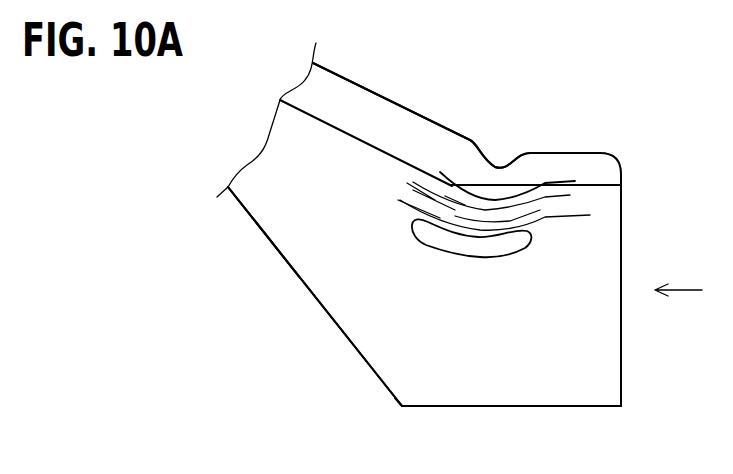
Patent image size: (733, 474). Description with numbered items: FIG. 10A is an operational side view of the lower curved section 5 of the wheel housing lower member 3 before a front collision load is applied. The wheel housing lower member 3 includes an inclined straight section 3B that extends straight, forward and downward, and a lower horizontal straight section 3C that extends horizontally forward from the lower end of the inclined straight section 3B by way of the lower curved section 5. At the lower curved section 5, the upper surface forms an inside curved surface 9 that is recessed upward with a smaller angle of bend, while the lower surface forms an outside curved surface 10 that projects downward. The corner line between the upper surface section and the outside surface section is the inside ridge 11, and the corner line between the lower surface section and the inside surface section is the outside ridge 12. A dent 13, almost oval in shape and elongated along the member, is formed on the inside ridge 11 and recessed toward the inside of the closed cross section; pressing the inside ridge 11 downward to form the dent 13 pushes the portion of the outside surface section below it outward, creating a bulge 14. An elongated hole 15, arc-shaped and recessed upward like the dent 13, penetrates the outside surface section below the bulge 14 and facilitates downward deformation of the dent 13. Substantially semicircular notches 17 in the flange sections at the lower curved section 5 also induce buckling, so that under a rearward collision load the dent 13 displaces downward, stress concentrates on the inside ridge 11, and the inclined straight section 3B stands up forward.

The wheel housing lower member 3 is at (263, 248).
The inclined straight section 3B is at (232, 215).
The lower horizontal straight section 3C is at (512, 407).
The lower curved section 5 is at (470, 103).
The inside curved surface 9 is at (440, 173).
The outside curved surface 10 is at (402, 407).
The inside ridge 11 is at (362, 140).
The outside ridge 12 is at (313, 297).
The dent 13 is at (512, 188).
The bulge 14 is at (407, 183).
The elongated hole 15 is at (503, 247).
The notch 17 is at (483, 153).